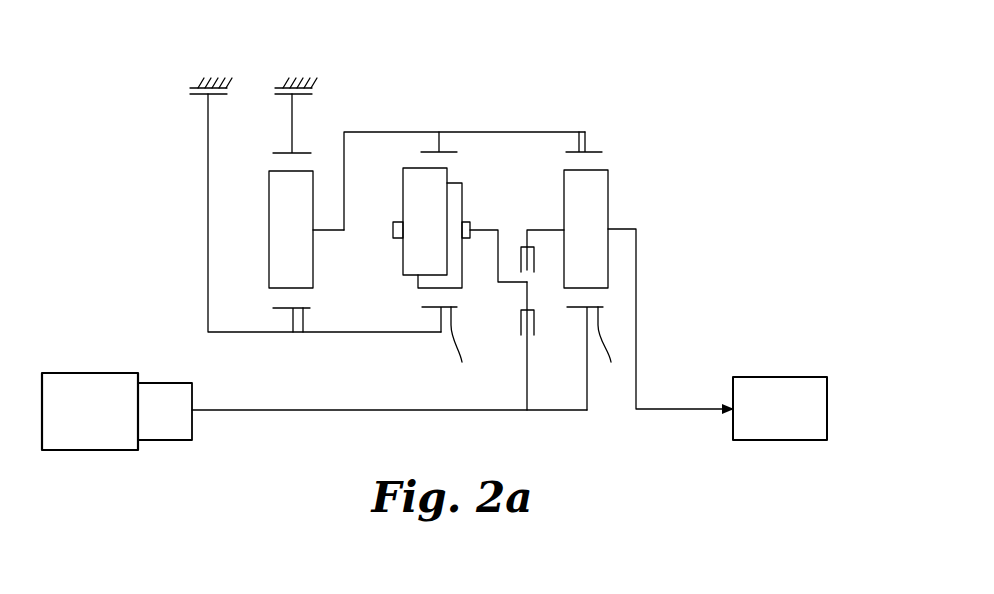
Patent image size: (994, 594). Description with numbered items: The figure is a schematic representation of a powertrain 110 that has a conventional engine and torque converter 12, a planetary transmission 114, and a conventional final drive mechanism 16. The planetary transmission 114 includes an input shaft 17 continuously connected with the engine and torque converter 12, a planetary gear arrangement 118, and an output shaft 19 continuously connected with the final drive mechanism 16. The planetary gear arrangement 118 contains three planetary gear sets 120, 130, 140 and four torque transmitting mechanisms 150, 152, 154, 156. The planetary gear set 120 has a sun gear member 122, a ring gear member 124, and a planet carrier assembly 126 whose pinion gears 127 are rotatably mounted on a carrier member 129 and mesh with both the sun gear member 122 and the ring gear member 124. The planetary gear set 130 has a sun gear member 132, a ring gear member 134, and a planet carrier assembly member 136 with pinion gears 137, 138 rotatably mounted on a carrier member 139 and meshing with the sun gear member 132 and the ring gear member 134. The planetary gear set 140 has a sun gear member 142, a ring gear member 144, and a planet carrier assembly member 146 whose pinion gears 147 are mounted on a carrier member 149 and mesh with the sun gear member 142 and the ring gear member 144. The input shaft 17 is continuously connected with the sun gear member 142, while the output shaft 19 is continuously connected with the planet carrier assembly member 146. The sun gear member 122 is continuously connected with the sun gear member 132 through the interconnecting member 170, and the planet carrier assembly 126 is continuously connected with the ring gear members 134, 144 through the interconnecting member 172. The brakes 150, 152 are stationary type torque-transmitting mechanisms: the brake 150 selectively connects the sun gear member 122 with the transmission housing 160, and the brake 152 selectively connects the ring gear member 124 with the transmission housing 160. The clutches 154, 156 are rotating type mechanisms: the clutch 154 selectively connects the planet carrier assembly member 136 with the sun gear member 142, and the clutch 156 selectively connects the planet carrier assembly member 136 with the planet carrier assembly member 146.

The engine and torque converter 12 is at (106, 363).
The final drive mechanism 16 is at (766, 373).
The input shaft 17 is at (218, 412).
The output shaft 19 is at (700, 411).
The powertrain 110 is at (157, 195).
The planetary transmission 114 is at (403, 90).
The planetary gear arrangement 118 is at (502, 90).
The planetary gear set 120 is at (283, 313).
The sun gear member 122 is at (303, 332).
The ring gear member 124 is at (287, 148).
The planet carrier assembly 126 is at (318, 237).
The pinion gears 127 is at (291, 229).
The carrier member 129 is at (333, 232).
The planetary gear set 130 is at (436, 315).
The sun gear member 132 is at (466, 349).
The ring gear member 134 is at (430, 144).
The planet carrier assembly member 136 is at (467, 246).
The pinion gears 137 is at (420, 221).
The pinion gears 138 is at (463, 203).
The carrier member 139 is at (479, 230).
The planetary gear set 140 is at (580, 311).
The sun gear member 142 is at (613, 349).
The ring gear member 144 is at (578, 131).
The planet carrier assembly member 146 is at (614, 224).
The pinion gears 147 is at (586, 229).
The carrier member 149 is at (630, 227).
The brake 150 is at (187, 89).
The brake 152 is at (272, 89).
The clutch 154 is at (518, 316).
The clutch 156 is at (536, 245).
The transmission housing 160 is at (198, 78).
The interconnecting member 170 is at (353, 333).
The interconnecting member 172 is at (456, 131).